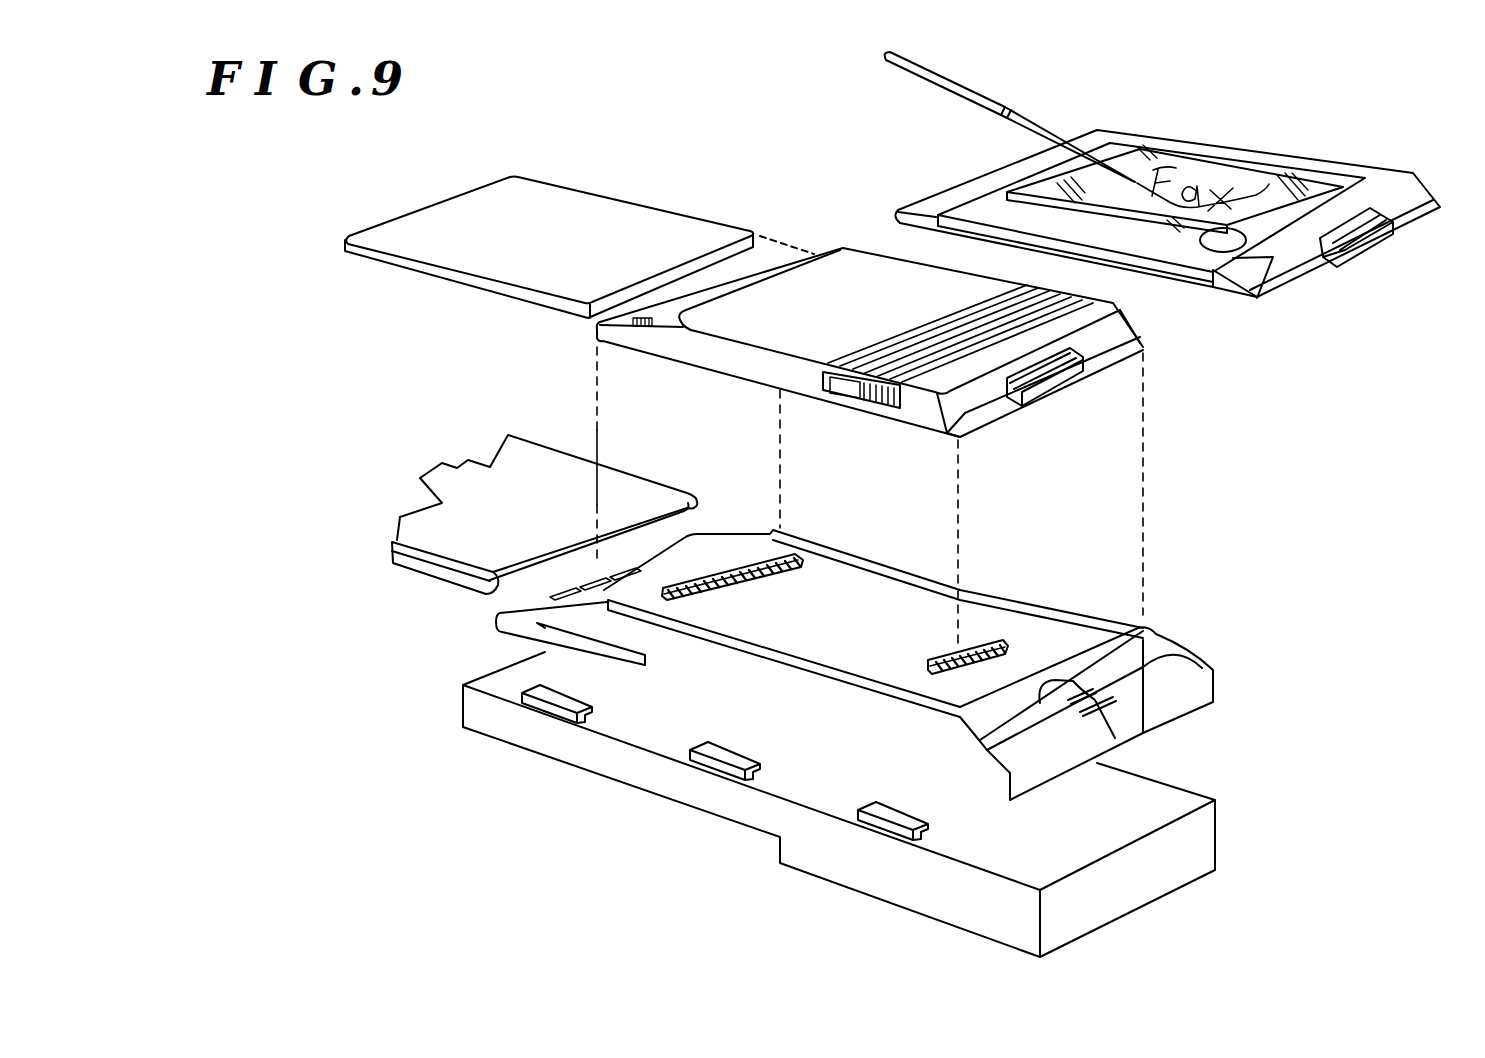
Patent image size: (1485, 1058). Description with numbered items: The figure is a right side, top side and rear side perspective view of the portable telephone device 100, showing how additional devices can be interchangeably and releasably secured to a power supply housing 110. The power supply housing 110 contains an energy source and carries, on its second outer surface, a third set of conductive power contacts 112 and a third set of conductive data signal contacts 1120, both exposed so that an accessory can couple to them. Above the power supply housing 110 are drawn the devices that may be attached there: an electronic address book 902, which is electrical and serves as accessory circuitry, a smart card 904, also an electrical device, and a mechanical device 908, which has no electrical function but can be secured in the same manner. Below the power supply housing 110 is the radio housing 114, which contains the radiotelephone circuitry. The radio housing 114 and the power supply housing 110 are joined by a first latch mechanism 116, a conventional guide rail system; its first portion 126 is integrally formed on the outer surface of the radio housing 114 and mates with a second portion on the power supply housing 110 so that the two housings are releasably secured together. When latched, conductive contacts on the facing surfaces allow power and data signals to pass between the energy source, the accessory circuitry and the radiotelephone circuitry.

The portable telephone device 100 is at (524, 142).
The smart card 904 is at (680, 223).
The electronic address book 902 is at (1096, 384).
The mechanical device 908 is at (659, 476).
The power supply housing 110 is at (817, 727).
The third set of conductive data signal contacts 1120 is at (779, 592).
The third set of conductive power contacts 112 is at (1016, 637).
The radio housing 114 is at (693, 793).
The first portion of the first latch mechanism 126 is at (558, 700).
The first latch mechanism 116 is at (944, 820).